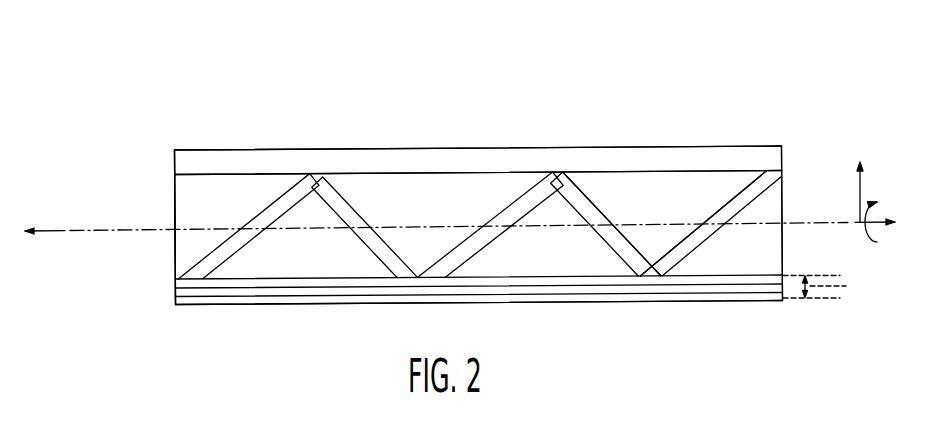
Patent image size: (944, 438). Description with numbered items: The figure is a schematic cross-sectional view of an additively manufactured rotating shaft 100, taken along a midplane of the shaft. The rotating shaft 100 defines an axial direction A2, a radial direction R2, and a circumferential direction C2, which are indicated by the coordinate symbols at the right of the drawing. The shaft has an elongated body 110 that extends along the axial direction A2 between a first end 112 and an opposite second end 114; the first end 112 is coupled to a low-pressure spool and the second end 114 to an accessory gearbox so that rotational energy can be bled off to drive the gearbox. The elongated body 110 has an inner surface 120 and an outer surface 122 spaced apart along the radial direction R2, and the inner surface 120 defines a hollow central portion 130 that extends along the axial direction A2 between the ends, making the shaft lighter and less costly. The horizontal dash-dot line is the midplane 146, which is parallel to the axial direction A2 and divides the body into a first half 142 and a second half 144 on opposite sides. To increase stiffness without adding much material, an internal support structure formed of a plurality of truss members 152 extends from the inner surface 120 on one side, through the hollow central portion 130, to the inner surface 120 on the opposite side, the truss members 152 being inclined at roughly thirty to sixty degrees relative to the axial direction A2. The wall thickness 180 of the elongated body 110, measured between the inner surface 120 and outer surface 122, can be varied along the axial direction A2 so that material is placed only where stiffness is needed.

The rotating shaft 100 is at (105, 107).
The elongated body 110 is at (243, 162).
The first end 112 is at (174, 316).
The second end 114 is at (785, 305).
The inner surface 120 is at (342, 303).
The outer surface 122 is at (427, 177).
The hollow central portion 130 is at (655, 197).
The first half 142 is at (170, 262).
The second half 144 is at (174, 196).
The midplane 146 is at (145, 234).
The truss members 152 is at (347, 204).
The wall thickness 180 is at (830, 289).
The radial direction R2 is at (872, 178).
The axial direction A2 is at (877, 197).
The circumferential direction C2 is at (883, 235).